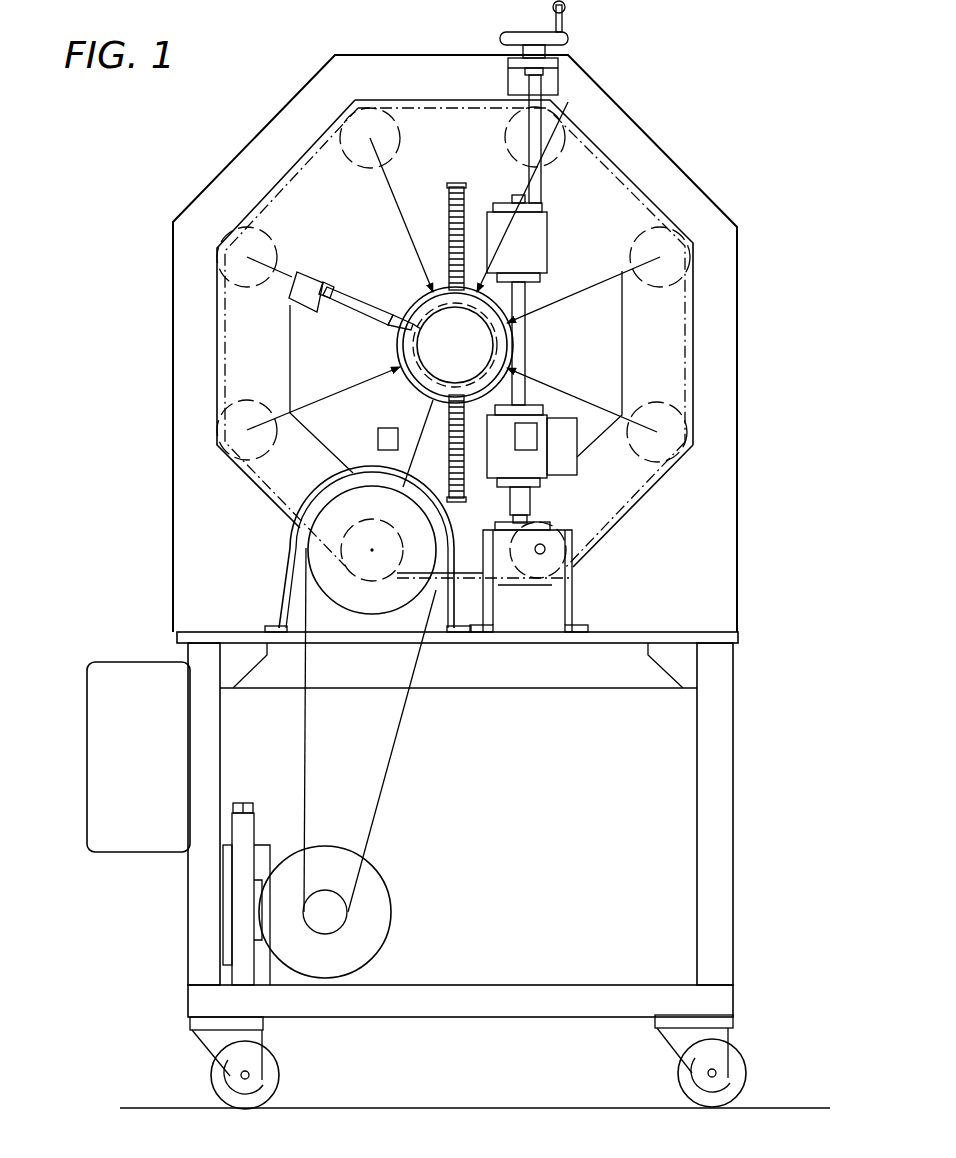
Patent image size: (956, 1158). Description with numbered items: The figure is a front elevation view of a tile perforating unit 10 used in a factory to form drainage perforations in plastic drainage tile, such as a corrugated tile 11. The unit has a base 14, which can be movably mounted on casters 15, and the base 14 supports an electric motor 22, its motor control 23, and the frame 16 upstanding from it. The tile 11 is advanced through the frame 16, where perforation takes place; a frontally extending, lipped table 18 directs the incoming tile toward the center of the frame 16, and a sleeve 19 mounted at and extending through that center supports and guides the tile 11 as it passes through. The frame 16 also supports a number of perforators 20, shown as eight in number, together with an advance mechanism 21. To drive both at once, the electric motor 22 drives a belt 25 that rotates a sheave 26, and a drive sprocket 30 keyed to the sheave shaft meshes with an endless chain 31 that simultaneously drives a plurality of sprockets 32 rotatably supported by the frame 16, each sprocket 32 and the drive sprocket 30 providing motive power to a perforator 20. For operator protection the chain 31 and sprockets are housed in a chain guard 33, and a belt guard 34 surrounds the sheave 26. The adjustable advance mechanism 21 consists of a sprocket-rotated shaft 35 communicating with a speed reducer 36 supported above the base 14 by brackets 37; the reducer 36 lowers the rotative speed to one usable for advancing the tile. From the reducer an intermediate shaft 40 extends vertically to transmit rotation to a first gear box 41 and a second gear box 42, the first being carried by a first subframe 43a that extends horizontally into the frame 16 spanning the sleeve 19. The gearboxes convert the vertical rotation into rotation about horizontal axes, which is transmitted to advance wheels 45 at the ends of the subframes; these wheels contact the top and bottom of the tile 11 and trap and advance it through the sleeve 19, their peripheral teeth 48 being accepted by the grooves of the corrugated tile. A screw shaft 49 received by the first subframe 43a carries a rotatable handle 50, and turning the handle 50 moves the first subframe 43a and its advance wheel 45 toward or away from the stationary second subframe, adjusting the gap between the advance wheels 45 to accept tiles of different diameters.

The tile perforating unit 10 is at (126, 435).
The corrugated tile 11 is at (434, 340).
The base 14 is at (736, 832).
The casters 15 is at (276, 1062).
The frame 16 is at (739, 532).
The lipped table 18 is at (376, 442).
The sleeve 19 is at (410, 385).
The perforators 20 is at (350, 283).
The advance mechanism 21 is at (556, 373).
The electric motor 22 is at (392, 898).
The motor control 23 is at (140, 752).
The belt 25 is at (388, 800).
The sheave 26 is at (316, 556).
The drive sprocket 30 is at (378, 524).
The endless chain 31 is at (630, 497).
The sprockets 32 is at (401, 142).
The chain guard 33 is at (632, 177).
The belt guard 34 is at (283, 591).
The shaft 35 is at (546, 548).
The speed reducer 36 is at (552, 582).
The brackets 37 is at (575, 610).
The intermediate shaft 40 is at (527, 338).
The first gear box 41 is at (545, 262).
The second gear box 42 is at (540, 470).
The first subframe 43a is at (530, 246).
The advance wheels 45 is at (462, 188).
The peripheral teeth 48 is at (448, 220).
The screw shaft 49 is at (560, 112).
The rotatable handle 50 is at (565, 42).